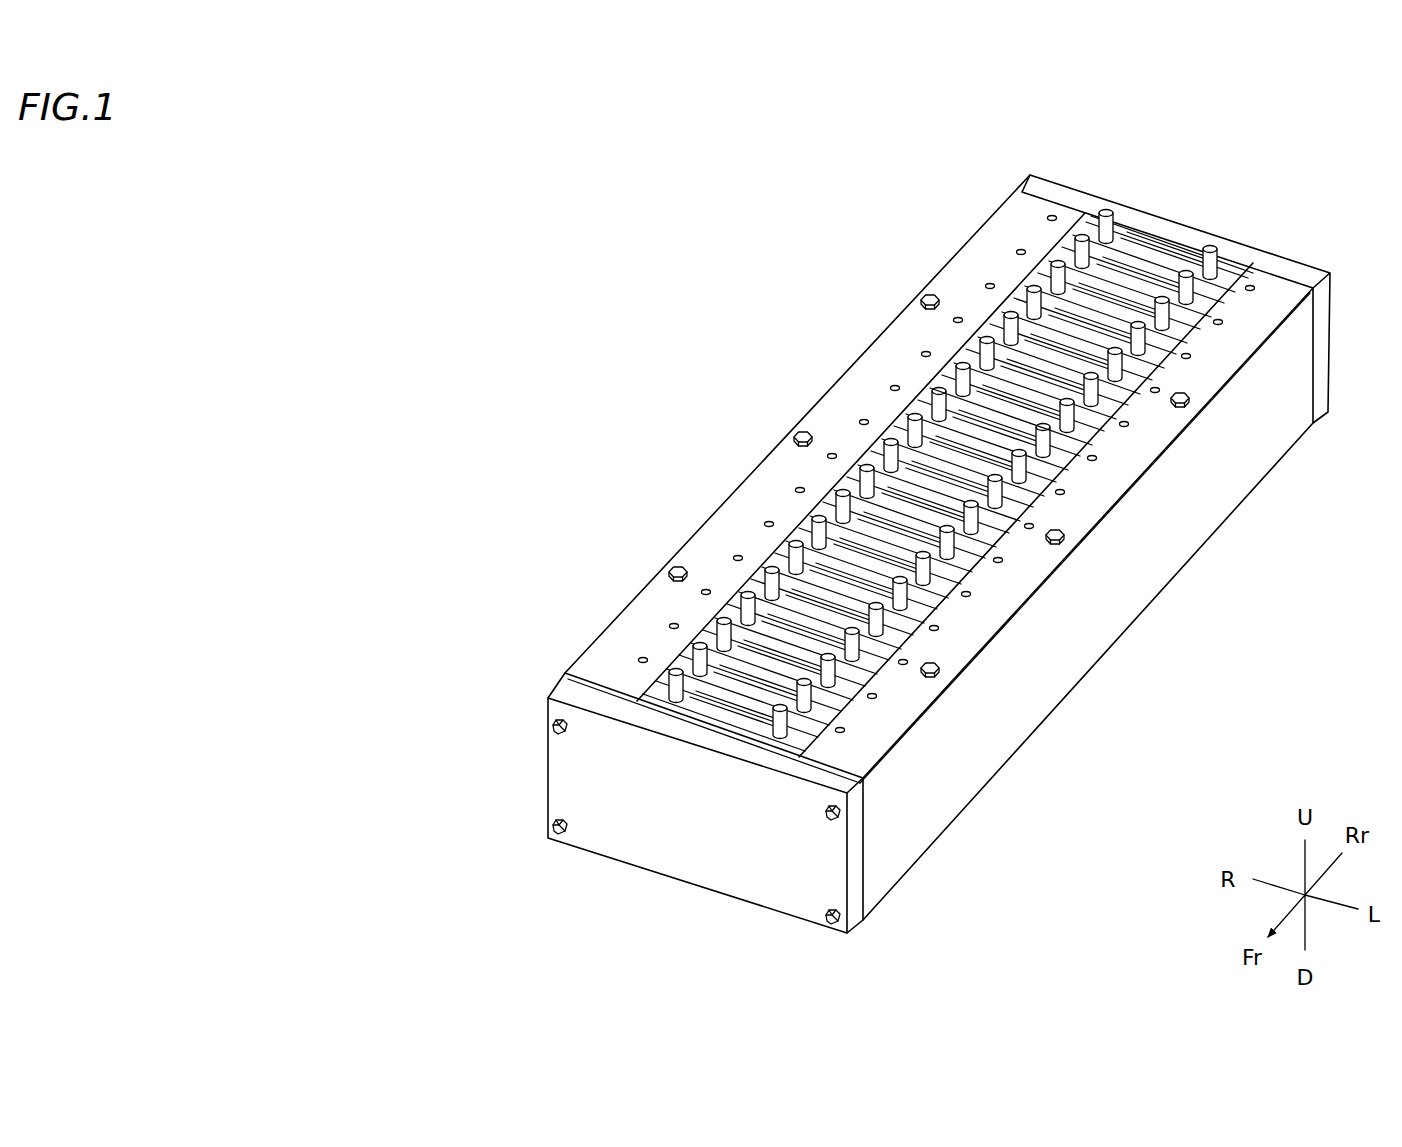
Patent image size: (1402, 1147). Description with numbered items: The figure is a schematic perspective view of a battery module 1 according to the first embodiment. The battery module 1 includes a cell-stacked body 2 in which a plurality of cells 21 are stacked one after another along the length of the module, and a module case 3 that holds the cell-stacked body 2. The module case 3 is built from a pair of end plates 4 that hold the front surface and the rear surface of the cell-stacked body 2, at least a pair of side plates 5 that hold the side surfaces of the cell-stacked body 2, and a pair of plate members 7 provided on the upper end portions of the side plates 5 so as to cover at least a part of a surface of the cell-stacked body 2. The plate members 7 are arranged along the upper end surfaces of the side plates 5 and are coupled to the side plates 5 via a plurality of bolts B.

The battery module 1 is at (1306, 157).
The cell-stacked body 2 is at (1072, 364).
The cell 21 is at (1045, 395).
The module case 3 is at (1186, 216).
The end plate 4 is at (1248, 260).
The side plate 5 is at (962, 248).
The plate member 7 is at (900, 358).
The bolt B is at (680, 563).